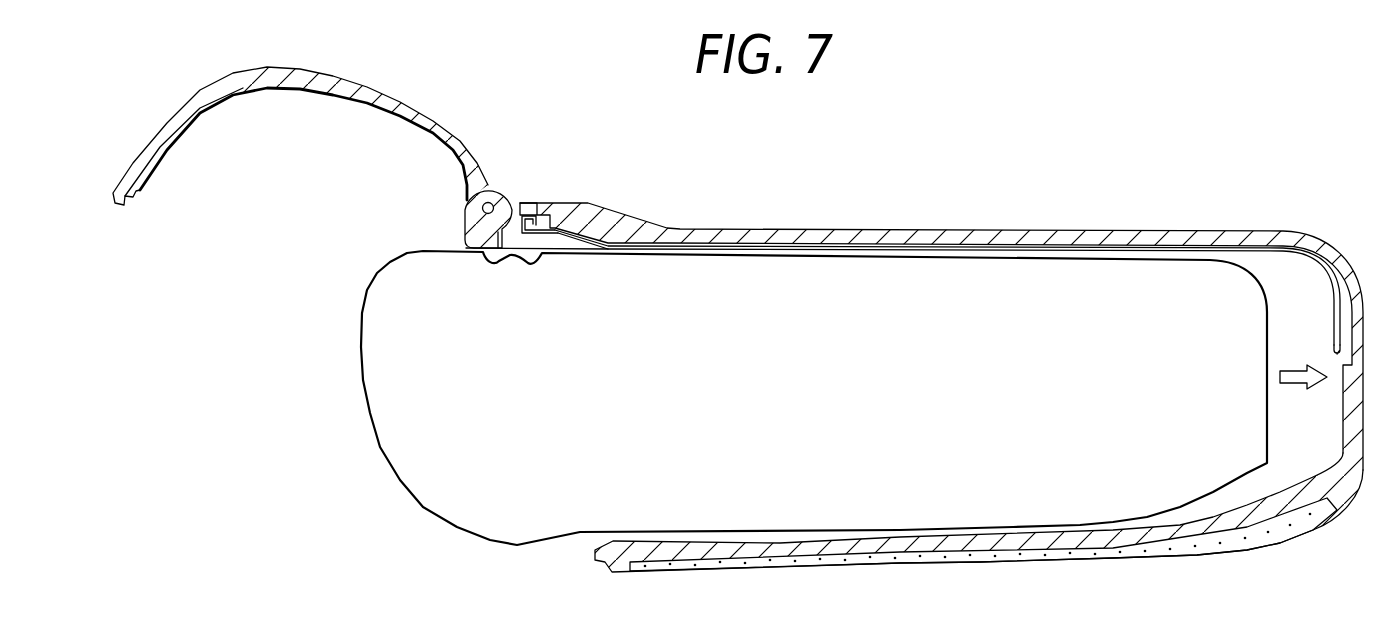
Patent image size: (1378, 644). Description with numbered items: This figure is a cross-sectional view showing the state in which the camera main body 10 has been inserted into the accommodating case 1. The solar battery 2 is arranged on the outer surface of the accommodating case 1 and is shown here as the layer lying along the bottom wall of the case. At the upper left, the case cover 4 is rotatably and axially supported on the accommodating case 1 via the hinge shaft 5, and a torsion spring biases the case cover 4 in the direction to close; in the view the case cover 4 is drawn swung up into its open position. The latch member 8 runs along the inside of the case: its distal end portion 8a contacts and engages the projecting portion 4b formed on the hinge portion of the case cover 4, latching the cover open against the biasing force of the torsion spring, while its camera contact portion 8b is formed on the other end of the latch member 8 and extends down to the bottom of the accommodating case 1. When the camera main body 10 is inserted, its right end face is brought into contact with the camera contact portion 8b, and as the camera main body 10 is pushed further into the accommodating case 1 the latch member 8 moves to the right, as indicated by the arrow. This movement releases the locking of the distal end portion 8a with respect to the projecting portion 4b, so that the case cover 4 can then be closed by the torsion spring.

The accommodating case 1 is at (727, 240).
The solar battery 2 is at (1115, 552).
The case cover 4 is at (390, 100).
The projecting portion 4b is at (515, 205).
The hinge shaft 5 is at (483, 209).
The latch member 8 is at (606, 242).
The distal end portion 8a is at (524, 218).
The camera contact portion 8b is at (1330, 345).
The camera main body 10 is at (806, 268).